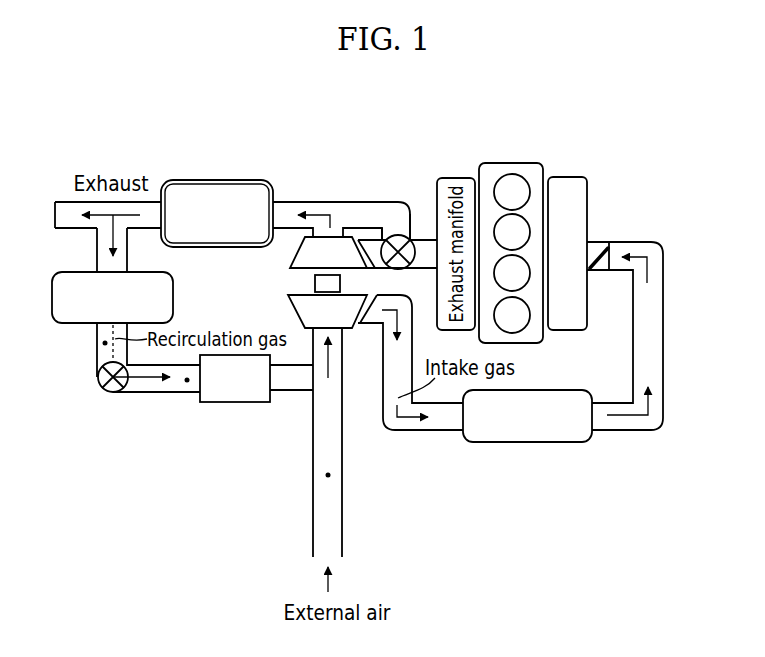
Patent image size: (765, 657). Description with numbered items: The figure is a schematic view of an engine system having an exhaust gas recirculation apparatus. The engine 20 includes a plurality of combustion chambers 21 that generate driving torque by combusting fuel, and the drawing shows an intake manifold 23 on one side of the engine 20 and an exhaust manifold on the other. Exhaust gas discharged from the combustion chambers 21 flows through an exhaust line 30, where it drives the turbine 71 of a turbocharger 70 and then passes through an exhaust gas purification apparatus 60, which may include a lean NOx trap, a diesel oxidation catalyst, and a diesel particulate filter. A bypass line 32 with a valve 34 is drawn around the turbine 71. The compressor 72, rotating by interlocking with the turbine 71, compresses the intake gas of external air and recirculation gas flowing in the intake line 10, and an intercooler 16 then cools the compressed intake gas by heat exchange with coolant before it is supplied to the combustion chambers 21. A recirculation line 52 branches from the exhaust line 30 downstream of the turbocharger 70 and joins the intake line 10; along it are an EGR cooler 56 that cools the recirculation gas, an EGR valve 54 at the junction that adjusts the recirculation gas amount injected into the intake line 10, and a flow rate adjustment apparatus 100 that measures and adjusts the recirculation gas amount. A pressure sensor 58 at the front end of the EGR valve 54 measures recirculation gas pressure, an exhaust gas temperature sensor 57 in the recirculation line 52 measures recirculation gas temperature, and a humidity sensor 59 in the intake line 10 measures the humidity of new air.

The intake line 10 is at (401, 432).
The intercooler 16 is at (527, 443).
The engine 20 is at (553, 343).
The combustion chamber 21 is at (530, 275).
The intake manifold 23 is at (563, 177).
The exhaust line 30 is at (372, 242).
The bypass line 32 is at (370, 201).
The wastegate valve 34 is at (398, 235).
The recirculation line 52 is at (97, 357).
The EGR valve 54 is at (110, 393).
The EGR cooler 56 is at (47, 327).
The exhaust gas temperature sensor 57 is at (187, 382).
The pressure sensor 58 is at (103, 343).
The humidity sensor 59 is at (326, 475).
The exhaust gas purification apparatus 60 is at (212, 180).
The turbocharger 70 is at (282, 283).
The turbine 71 is at (288, 269).
The compressor 72 is at (288, 296).
The flow rate adjustment apparatus 100 is at (252, 403).